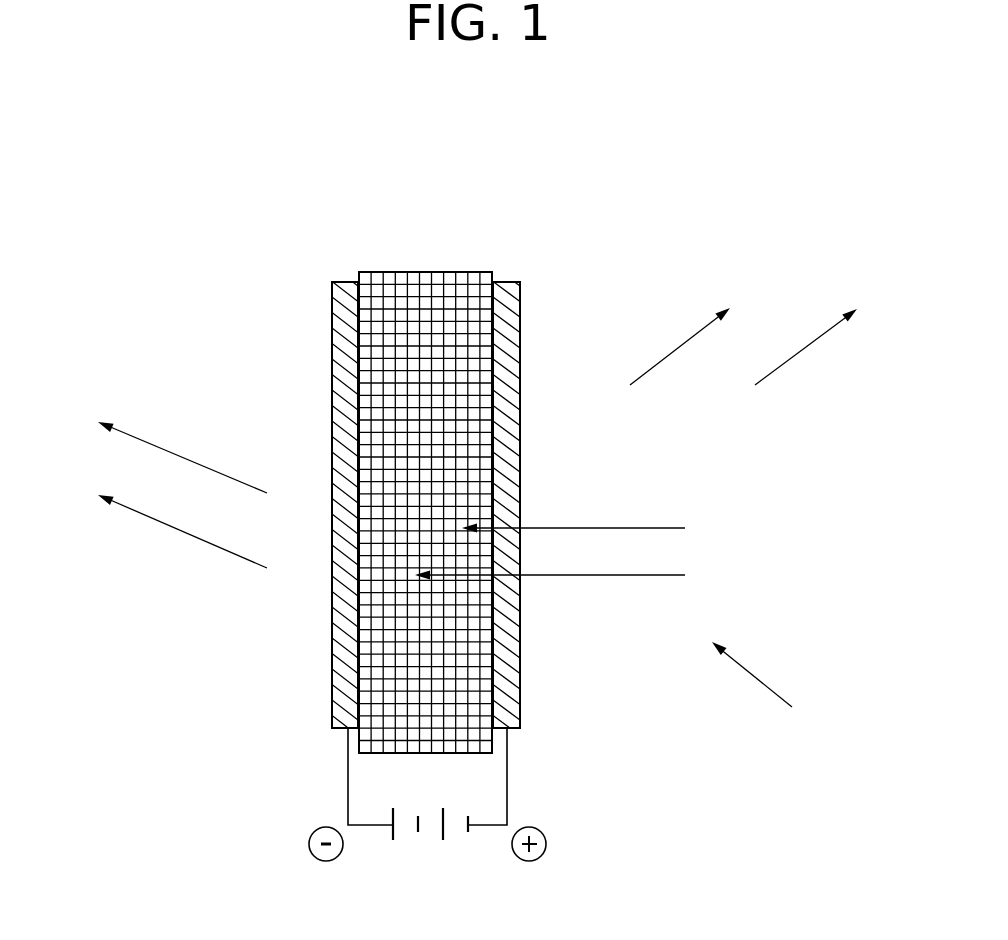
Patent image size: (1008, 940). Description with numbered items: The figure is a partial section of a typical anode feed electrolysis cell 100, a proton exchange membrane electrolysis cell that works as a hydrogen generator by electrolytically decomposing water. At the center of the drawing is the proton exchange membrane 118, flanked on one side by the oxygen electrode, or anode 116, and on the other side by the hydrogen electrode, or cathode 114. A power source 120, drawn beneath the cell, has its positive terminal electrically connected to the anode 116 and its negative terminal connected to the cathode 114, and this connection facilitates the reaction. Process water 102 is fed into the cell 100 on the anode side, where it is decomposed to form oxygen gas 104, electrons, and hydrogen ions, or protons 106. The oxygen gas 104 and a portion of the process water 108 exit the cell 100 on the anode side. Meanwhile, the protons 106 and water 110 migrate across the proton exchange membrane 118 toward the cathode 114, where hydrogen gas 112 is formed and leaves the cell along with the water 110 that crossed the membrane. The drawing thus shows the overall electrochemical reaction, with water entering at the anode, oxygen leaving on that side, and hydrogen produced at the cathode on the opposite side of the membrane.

The anode feed electrolysis cell 100 is at (459, 249).
The process water 102 is at (771, 687).
The oxygen gas 104 is at (698, 332).
The hydrogen ions (protons) 106 is at (596, 512).
The portion of the process water 108 is at (824, 338).
The water 110 is at (392, 548).
The hydrogen gas 112 is at (161, 444).
The hydrogen electrode (cathode) 114 is at (353, 282).
The oxygen electrode (anode) 116 is at (500, 282).
The proton exchange membrane 118 is at (415, 272).
The power source 120 is at (540, 769).